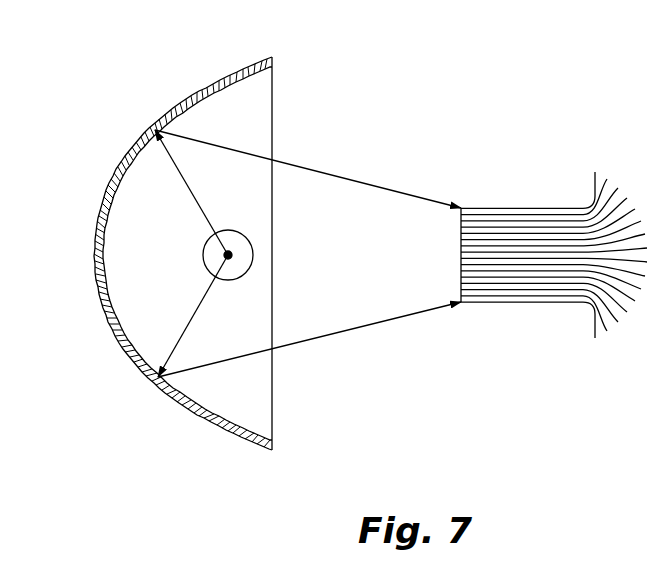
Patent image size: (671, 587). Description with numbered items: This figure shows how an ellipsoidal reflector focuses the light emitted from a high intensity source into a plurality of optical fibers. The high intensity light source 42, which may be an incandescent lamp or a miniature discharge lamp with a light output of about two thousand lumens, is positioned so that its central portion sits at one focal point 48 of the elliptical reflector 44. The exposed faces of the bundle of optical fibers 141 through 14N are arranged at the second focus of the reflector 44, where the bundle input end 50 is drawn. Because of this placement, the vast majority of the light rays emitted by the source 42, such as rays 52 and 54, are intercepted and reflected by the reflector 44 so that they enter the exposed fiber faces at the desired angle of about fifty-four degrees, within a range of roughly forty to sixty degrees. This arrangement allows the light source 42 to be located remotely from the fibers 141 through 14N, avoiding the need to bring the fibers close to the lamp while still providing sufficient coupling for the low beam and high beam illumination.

The elliptical reflector 44 is at (178, 99).
The high intensity light source 42 is at (206, 243).
The focal point 48 is at (224, 257).
The light ray 54 is at (190, 187).
The light ray 52 is at (193, 318).
The fiber bundle input end 50 is at (521, 256).
The optical fiber 141 is at (493, 208).
The optical fiber 14N is at (528, 334).